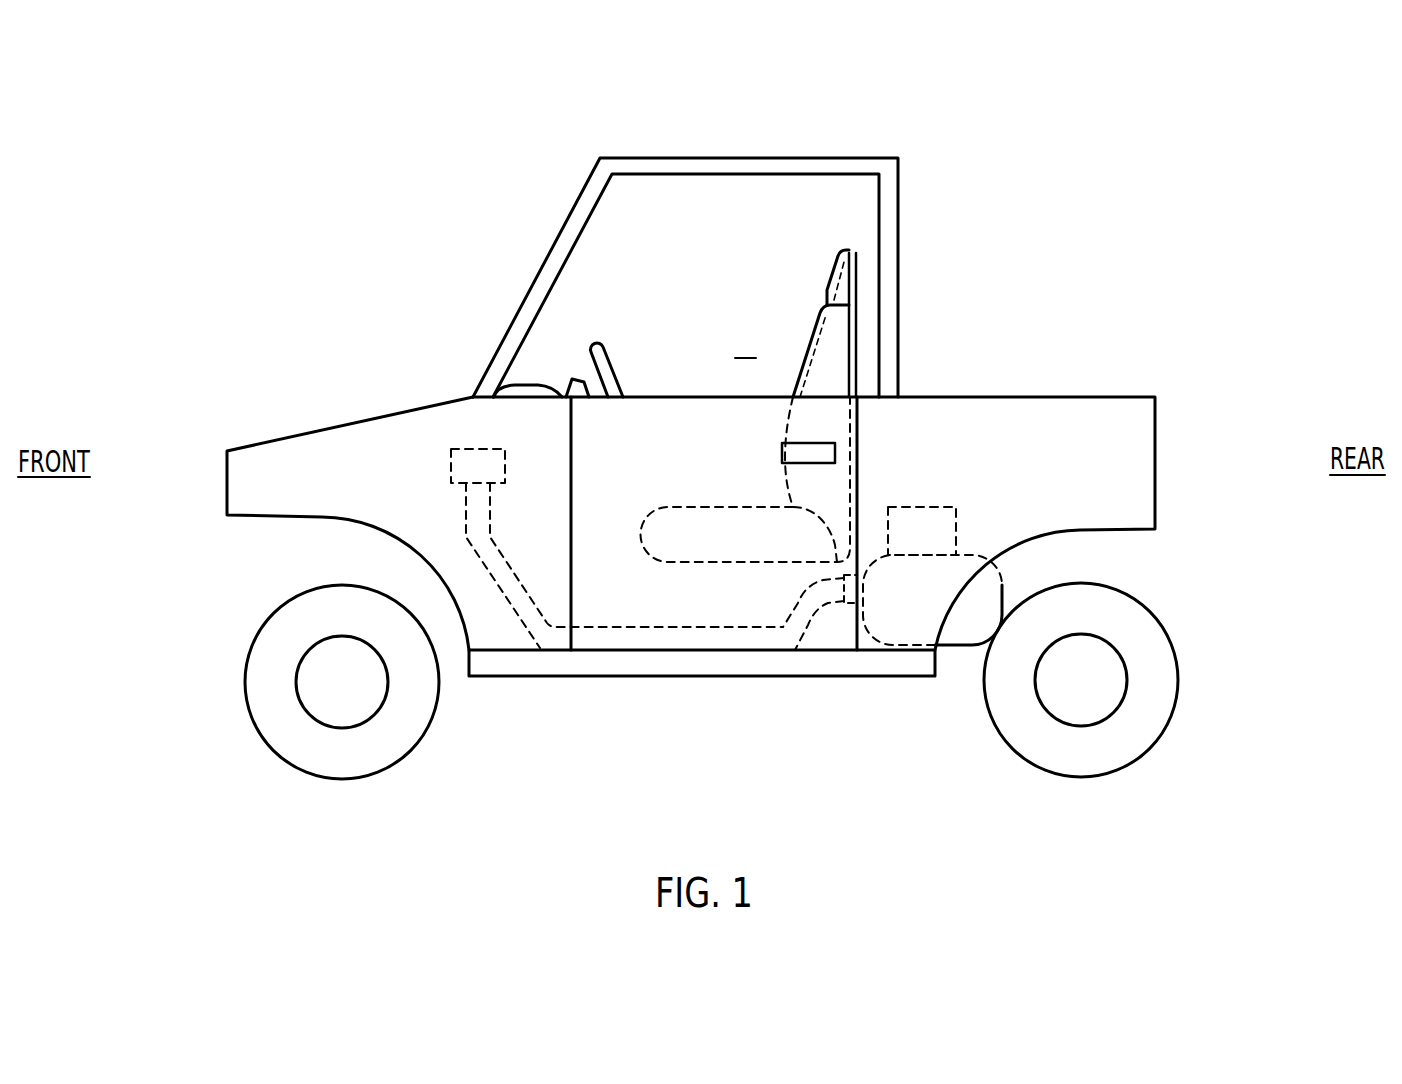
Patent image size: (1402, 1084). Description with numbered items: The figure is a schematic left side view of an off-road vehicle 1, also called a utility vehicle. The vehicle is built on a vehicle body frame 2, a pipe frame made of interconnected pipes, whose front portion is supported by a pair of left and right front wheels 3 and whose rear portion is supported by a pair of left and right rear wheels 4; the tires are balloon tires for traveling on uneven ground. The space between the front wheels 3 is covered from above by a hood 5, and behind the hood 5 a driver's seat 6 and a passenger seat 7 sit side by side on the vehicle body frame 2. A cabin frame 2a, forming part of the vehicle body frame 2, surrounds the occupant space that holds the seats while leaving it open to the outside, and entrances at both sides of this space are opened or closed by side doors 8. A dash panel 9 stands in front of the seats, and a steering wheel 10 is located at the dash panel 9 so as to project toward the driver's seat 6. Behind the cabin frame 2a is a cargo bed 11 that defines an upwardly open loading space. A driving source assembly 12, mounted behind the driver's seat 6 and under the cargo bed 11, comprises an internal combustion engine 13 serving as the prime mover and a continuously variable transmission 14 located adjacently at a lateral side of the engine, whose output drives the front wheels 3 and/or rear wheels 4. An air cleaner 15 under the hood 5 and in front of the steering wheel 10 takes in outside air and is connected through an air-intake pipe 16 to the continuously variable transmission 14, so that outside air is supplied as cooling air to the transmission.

The off-road vehicle 1 is at (393, 198).
The vehicle body frame 2 is at (570, 678).
The cabin frame 2a is at (578, 200).
The front wheels 3 is at (245, 668).
The rear wheels 4 is at (1178, 673).
The hood 5 is at (313, 431).
The driver's seat 6 is at (812, 342).
The passenger seat 7 is at (827, 274).
The side doors 8 is at (668, 605).
The dash panel 9 is at (530, 387).
The steering wheel 10 is at (597, 346).
The cargo bed 11 is at (1098, 397).
The driving source assembly 12 is at (1065, 292).
The internal combustion engine 13 is at (926, 507).
The continuously variable transmission 14 is at (1002, 590).
The air cleaner 15 is at (451, 465).
The air-intake pipe 16 is at (806, 638).